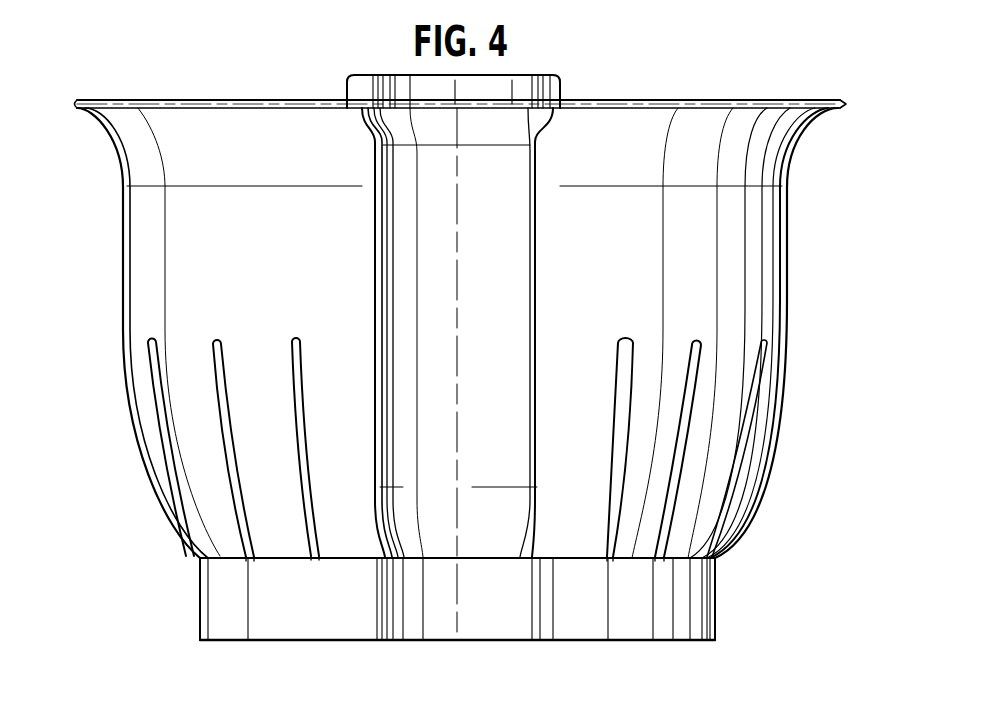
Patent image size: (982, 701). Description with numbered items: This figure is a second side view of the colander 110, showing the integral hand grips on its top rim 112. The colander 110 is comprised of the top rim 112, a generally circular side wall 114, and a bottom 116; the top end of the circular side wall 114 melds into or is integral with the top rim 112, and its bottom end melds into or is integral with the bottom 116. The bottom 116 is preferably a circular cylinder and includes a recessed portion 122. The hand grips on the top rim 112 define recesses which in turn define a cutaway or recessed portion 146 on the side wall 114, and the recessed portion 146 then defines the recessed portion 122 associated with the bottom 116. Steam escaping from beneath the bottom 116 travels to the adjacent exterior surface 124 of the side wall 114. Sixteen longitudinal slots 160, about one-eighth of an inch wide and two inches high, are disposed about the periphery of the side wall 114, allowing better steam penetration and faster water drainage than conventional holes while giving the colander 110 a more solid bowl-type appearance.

The colander 110 is at (787, 214).
The top rim 112 is at (841, 106).
The circular side wall 114 is at (123, 320).
The bottom 116 is at (715, 600).
The recessed portion 122 is at (512, 642).
The exterior surface 124 is at (633, 237).
The recessed portion 146 is at (506, 266).
The longitudinal slot 160 is at (700, 343).